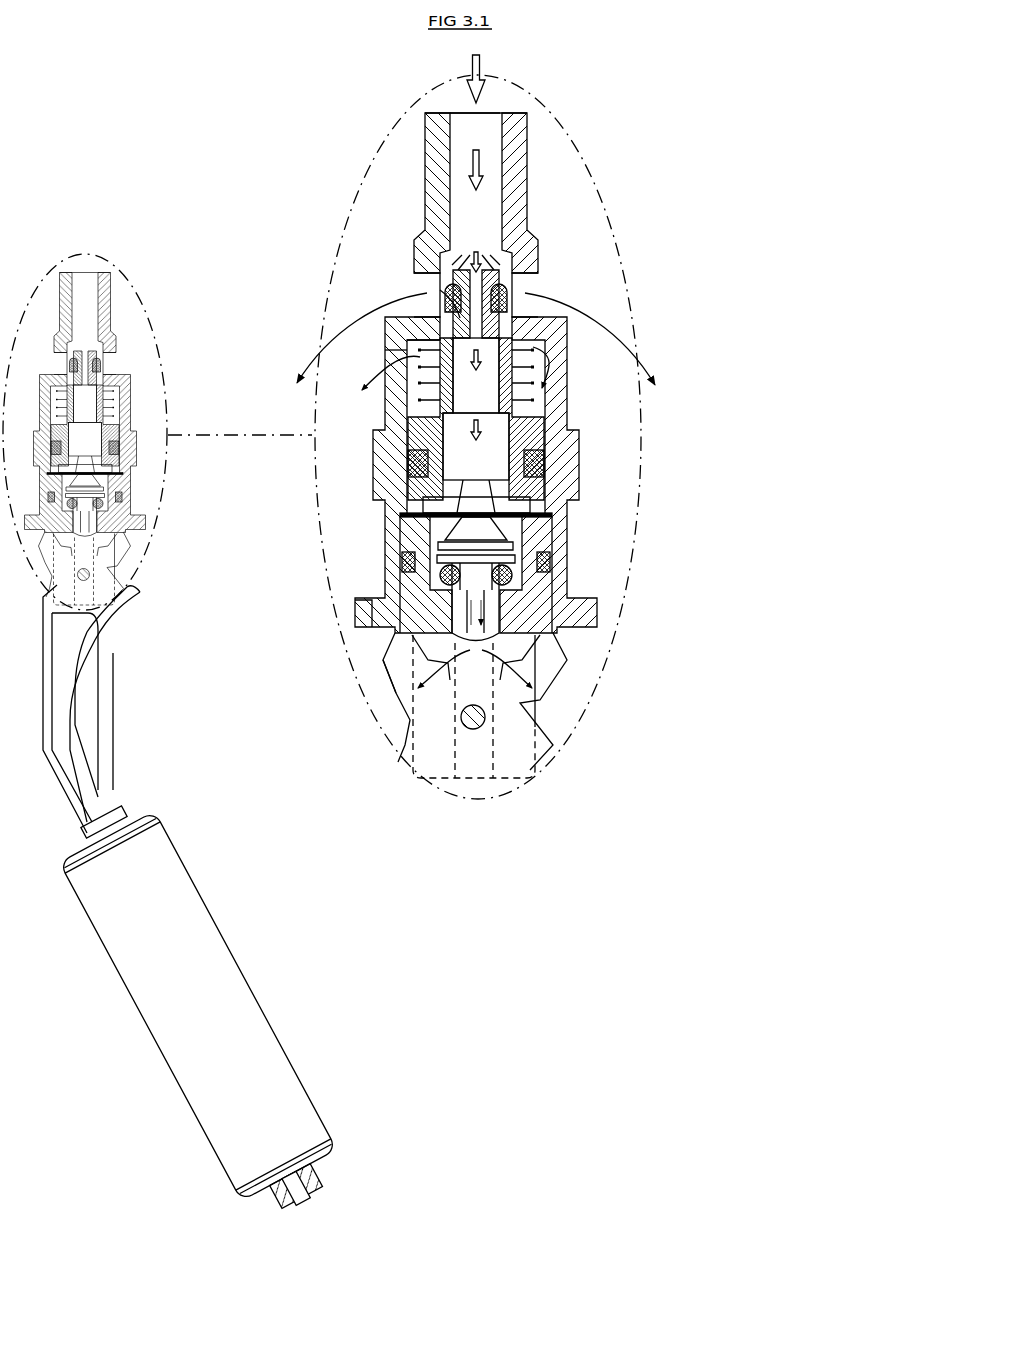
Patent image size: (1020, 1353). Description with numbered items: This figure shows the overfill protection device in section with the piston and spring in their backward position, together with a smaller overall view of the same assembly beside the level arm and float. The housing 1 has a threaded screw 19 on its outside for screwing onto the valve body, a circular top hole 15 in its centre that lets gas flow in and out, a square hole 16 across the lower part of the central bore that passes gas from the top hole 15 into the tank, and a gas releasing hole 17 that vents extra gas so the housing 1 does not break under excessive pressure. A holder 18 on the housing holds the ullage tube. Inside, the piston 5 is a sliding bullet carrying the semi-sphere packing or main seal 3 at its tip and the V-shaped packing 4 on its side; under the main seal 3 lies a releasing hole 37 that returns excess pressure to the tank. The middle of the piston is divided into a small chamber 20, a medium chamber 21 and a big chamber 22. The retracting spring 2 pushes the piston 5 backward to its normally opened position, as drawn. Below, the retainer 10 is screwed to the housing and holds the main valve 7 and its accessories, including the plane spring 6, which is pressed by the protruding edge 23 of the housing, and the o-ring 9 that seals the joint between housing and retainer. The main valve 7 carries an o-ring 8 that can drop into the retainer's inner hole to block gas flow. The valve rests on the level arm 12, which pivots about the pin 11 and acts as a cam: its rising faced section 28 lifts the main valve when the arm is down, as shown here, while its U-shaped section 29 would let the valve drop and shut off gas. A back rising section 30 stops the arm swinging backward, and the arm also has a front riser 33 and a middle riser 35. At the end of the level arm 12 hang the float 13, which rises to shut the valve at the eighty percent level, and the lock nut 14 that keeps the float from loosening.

The threaded screw 19 is at (530, 170).
The housing 1 is at (522, 246).
The releasing hole 37 is at (505, 298).
The semi-sphere packing or main seal 3 is at (490, 306).
The small chamber 20 is at (475, 333).
The spring 2 is at (514, 369).
The medium chamber 21 is at (475, 395).
The piston 5 is at (537, 428).
The big chamber 22 is at (477, 451).
The V-shaped packing 4 is at (547, 472).
The protruding edge 23 is at (552, 515).
The plane spring 6 is at (510, 538).
The o-ring 9 is at (545, 563).
The o-ring 8 is at (505, 580).
The main valve 7 is at (480, 600).
The rising faced section 28 is at (480, 647).
The U-shaped section 29 is at (522, 700).
The pin 11 is at (487, 720).
The top hole 15 is at (467, 140).
The square hole 16 is at (413, 283).
The gas releasing hole 17 is at (388, 360).
The retainer 10 is at (395, 537).
The front riser 33 is at (140, 593).
The holder 18 is at (356, 630).
The back rising section 30 is at (393, 668).
The middle riser 35 is at (119, 722).
The level arm 12 is at (115, 799).
The float 13 is at (230, 928).
The lock nut 14 is at (325, 1180).